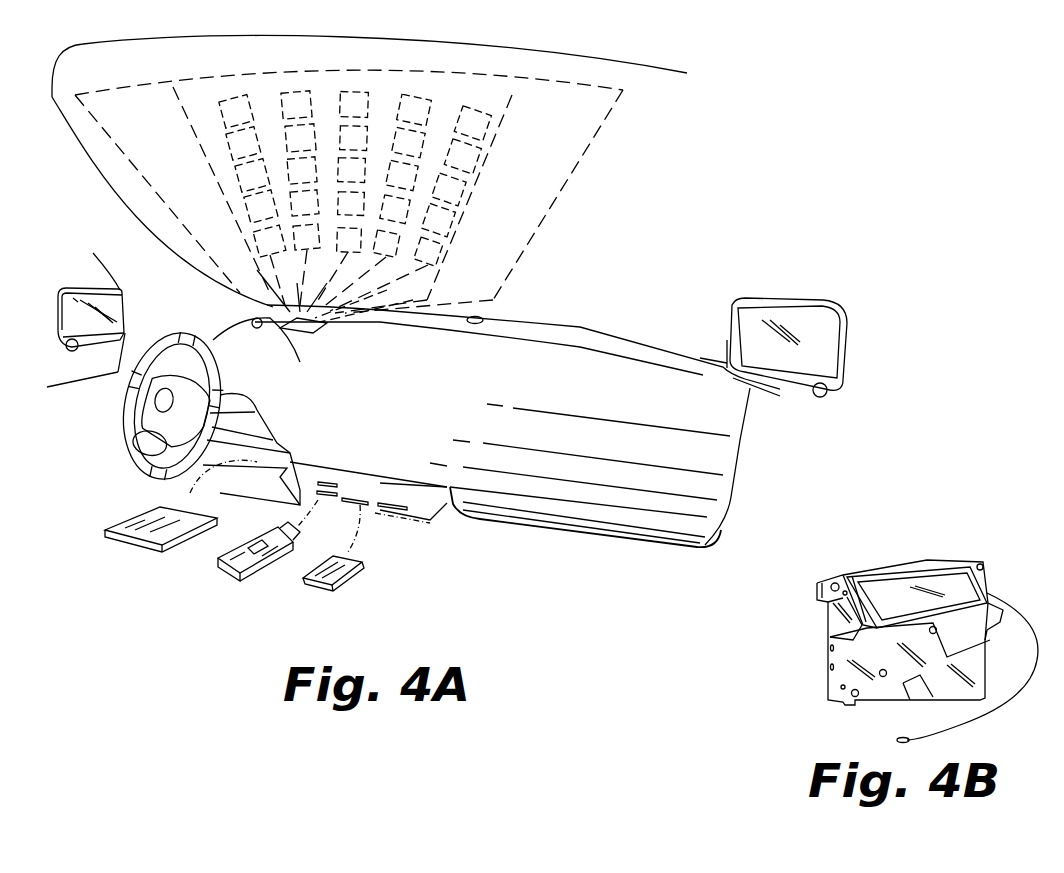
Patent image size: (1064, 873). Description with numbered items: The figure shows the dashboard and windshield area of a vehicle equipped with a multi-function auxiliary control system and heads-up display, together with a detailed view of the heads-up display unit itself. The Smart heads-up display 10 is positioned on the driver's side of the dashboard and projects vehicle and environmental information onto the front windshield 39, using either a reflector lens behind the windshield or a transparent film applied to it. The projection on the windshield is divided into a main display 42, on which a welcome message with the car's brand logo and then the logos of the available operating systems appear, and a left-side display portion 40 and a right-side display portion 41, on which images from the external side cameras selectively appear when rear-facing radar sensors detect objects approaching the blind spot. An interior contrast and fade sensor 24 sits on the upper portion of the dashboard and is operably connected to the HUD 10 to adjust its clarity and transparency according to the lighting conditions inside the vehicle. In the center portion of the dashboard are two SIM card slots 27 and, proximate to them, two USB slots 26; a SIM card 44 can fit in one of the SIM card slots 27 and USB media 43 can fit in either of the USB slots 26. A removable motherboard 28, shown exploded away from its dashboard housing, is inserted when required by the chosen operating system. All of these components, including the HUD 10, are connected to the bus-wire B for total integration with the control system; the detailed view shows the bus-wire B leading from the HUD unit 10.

In FIG. 4A, the front windshield 39 is at (473, 60).
In FIG. 4A, the main display 42 is at (305, 68).
In FIG. 4A, the left-side display portion 40 is at (158, 152).
In FIG. 4A, the right-side display portion 41 is at (530, 177).
In FIG. 4A, the interior contrast and fade sensor 24 is at (480, 315).
In FIG. 4A, the heads-up display (HUD) 10 is at (305, 330).
In FIG. 4B, the heads-up display (HUD) 10 is at (806, 642).
In FIG. 4A, the USB slots 26 is at (323, 480).
In FIG. 4A, the SIM card slots 27 is at (390, 503).
In FIG. 4A, the motherboard 28 is at (140, 527).
In FIG. 4A, the USB media 43 is at (218, 558).
In FIG. 4A, the SIM card 44 is at (303, 580).
In FIG. 4B, the bus-wire B is at (1012, 709).